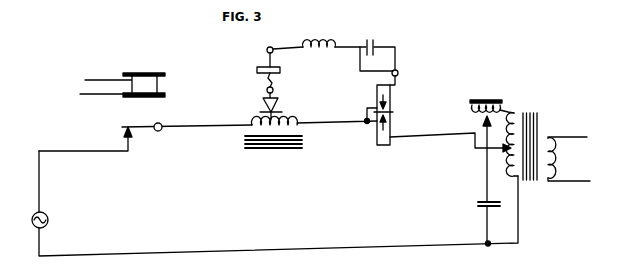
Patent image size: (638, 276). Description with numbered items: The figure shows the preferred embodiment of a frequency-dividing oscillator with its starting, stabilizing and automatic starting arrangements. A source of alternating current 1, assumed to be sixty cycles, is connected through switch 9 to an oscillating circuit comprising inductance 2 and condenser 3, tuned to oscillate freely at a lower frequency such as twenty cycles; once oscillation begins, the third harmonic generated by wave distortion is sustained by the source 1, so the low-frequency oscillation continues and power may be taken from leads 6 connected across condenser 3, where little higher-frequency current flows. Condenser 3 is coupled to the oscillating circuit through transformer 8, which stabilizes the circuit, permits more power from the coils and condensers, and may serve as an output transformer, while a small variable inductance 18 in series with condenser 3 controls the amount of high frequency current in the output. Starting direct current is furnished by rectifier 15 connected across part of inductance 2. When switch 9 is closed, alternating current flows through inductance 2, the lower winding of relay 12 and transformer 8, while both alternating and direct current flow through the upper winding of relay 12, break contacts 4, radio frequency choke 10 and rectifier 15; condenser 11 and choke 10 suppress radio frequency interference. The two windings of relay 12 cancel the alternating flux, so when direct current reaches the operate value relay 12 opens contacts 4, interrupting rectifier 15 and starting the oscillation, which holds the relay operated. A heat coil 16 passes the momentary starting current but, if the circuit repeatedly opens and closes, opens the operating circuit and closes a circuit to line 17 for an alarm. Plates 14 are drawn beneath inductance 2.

The source of alternating current 1 is at (48, 217).
The inductance 2 is at (250, 128).
The condenser 3 is at (482, 203).
The break contacts 4 is at (368, 74).
The leads 6 is at (577, 142).
The transformer 8 is at (536, 113).
The switch 9 is at (133, 123).
The radio frequency choke 10 is at (323, 44).
The condenser 11 is at (376, 43).
The relay 12 is at (391, 105).
The plates 14 is at (302, 146).
The rectifier 15 is at (262, 110).
The heat coil 16 is at (273, 84).
The line 17 is at (257, 70).
The variable inductance 18 is at (482, 100).